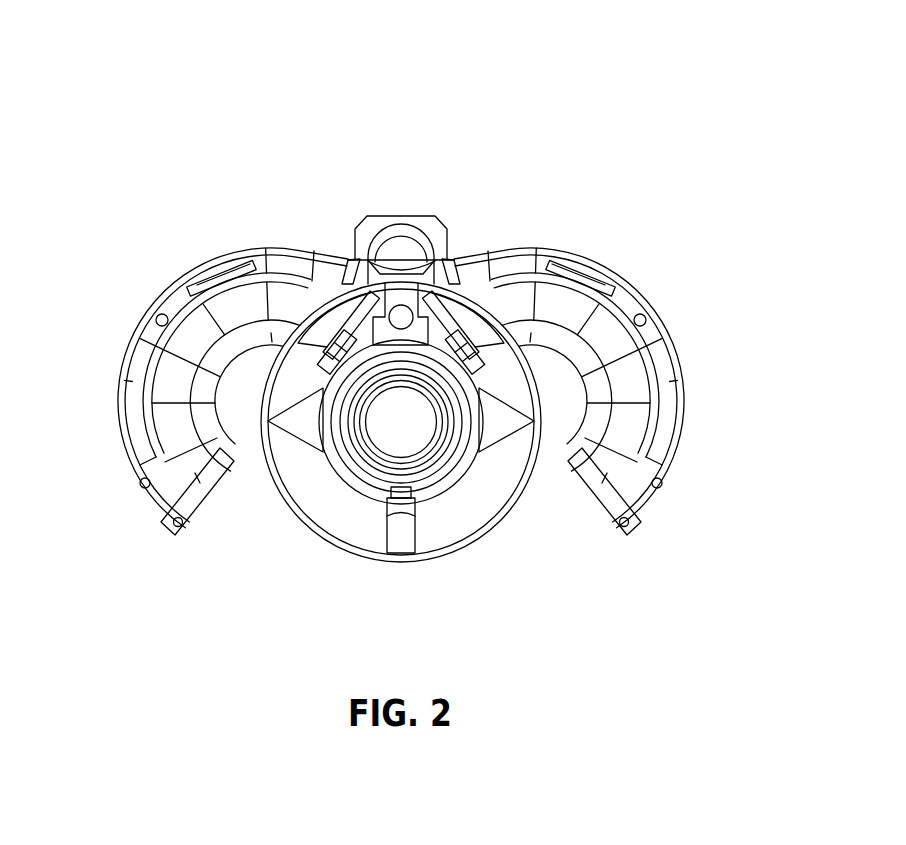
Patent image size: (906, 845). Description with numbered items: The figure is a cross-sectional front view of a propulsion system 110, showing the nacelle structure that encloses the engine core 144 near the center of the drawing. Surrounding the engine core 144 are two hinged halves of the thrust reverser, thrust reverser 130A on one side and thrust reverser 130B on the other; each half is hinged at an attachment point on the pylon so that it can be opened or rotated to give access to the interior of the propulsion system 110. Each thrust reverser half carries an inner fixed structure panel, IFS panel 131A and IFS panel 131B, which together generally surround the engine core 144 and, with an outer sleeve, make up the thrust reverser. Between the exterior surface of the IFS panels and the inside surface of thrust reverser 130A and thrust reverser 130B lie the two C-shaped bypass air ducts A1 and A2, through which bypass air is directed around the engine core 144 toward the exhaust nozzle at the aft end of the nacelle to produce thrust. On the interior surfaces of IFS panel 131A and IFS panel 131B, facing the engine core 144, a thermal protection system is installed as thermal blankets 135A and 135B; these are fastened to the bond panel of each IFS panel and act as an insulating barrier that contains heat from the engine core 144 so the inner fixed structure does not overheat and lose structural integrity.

The propulsion system 110 is at (493, 131).
The thrust reverser 130A is at (141, 318).
The thrust reverser 130B is at (681, 368).
The IFS panel 131A is at (213, 427).
The IFS panel 131B is at (588, 423).
The thermal protection system 135A is at (224, 449).
The thermal protection system 135B is at (578, 449).
The engine core 144 is at (410, 443).
The bypass air duct A1 is at (600, 483).
The bypass air duct A2 is at (199, 484).